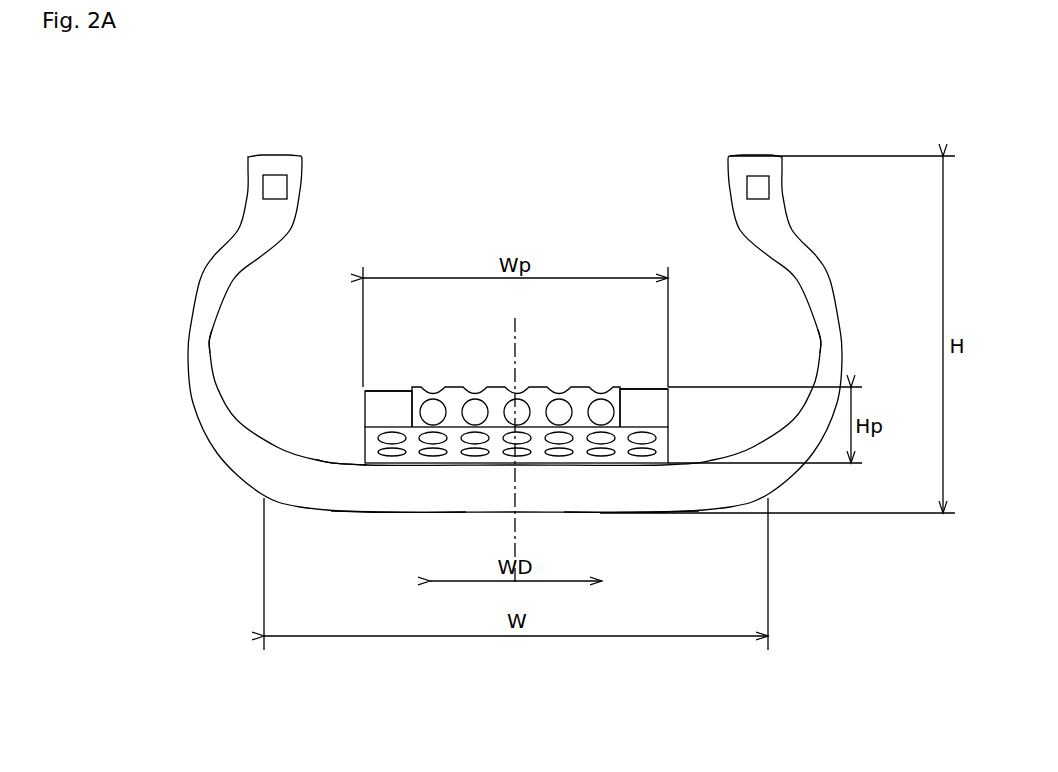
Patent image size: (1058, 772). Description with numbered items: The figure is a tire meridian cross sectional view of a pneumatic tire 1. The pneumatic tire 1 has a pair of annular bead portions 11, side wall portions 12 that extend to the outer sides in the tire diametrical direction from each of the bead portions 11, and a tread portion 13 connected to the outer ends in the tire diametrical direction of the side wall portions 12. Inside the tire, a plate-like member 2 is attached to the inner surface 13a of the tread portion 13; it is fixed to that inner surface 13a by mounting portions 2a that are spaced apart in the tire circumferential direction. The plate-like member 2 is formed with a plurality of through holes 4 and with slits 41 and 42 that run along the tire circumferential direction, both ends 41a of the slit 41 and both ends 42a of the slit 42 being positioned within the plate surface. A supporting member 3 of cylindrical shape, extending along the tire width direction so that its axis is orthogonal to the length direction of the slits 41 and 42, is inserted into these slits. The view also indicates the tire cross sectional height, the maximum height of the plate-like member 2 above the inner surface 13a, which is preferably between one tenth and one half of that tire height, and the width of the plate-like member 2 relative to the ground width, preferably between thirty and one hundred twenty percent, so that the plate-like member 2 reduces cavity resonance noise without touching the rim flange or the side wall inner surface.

The pneumatic tire 1 is at (176, 227).
The bead portion 11 is at (243, 186).
The side wall portion 12 is at (183, 330).
The tread portion 13 is at (591, 521).
The inner surface of the tread portion 13a is at (345, 463).
The plate-like member 2 is at (455, 388).
The mounting portion 2a is at (374, 447).
The supporting member 3 is at (666, 425).
The through hole 4 is at (562, 389).
The slit 41 is at (405, 427).
The ends of the slit 41a is at (392, 420).
The slit 42 is at (632, 408).
The ends of the slit 42a is at (623, 427).